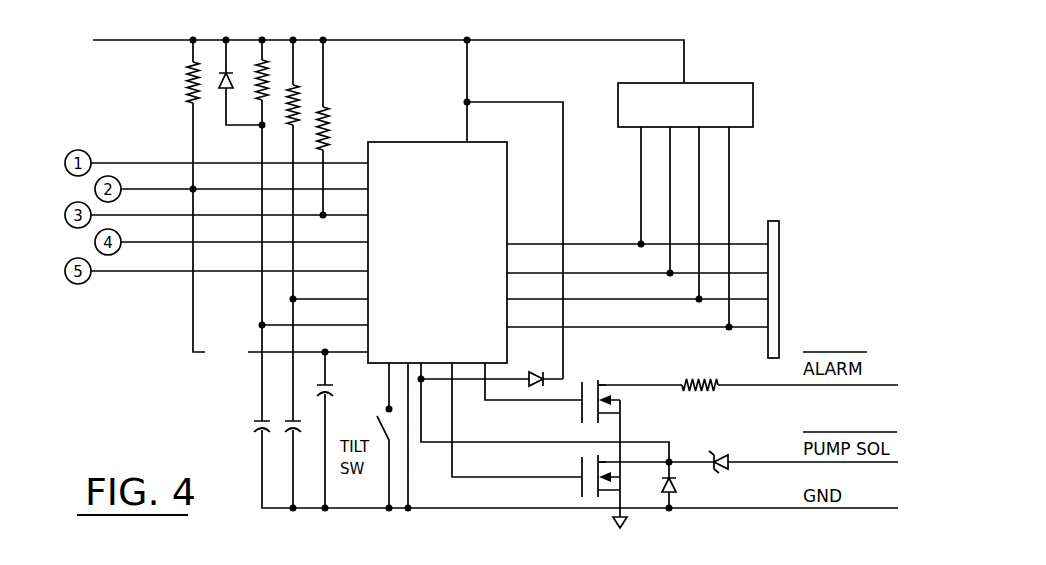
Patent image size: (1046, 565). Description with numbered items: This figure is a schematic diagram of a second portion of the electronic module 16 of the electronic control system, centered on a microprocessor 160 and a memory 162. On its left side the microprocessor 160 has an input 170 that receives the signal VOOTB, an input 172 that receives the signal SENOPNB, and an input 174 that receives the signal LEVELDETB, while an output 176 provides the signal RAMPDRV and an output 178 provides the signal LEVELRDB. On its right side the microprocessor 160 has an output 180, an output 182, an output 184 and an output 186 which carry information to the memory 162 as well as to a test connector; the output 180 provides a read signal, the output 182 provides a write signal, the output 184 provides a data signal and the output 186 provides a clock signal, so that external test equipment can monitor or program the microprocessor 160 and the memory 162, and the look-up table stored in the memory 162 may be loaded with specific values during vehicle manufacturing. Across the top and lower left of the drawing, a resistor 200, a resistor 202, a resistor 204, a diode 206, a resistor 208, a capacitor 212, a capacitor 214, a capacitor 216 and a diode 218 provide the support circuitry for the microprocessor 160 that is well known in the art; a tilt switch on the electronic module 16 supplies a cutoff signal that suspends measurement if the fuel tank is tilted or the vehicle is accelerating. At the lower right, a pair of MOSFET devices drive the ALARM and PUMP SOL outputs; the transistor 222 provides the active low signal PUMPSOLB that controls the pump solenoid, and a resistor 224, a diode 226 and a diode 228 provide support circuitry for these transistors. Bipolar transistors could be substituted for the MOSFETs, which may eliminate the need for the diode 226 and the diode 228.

The electronic module 16 is at (762, 48).
The microprocessor 160 is at (482, 143).
The memory 162 is at (755, 106).
The input 170 is at (367, 160).
The input 172 is at (366, 188).
The input 174 is at (360, 217).
The output 176 is at (363, 245).
The output 178 is at (366, 272).
The output 180 is at (507, 244).
The output 182 is at (507, 273).
The output 184 is at (507, 299).
The output 186 is at (507, 327).
The resistor 200 is at (331, 113).
The resistor 202 is at (298, 100).
The resistor 204 is at (267, 40).
The diode 206 is at (222, 91).
The resistor 208 is at (185, 76).
The capacitor 212 is at (257, 421).
The capacitor 214 is at (292, 418).
The capacitor 216 is at (320, 386).
The diode 218 is at (535, 372).
The transistor 222 is at (580, 491).
The resistor 224 is at (698, 382).
The diode 226 is at (724, 457).
The diode 228 is at (672, 480).